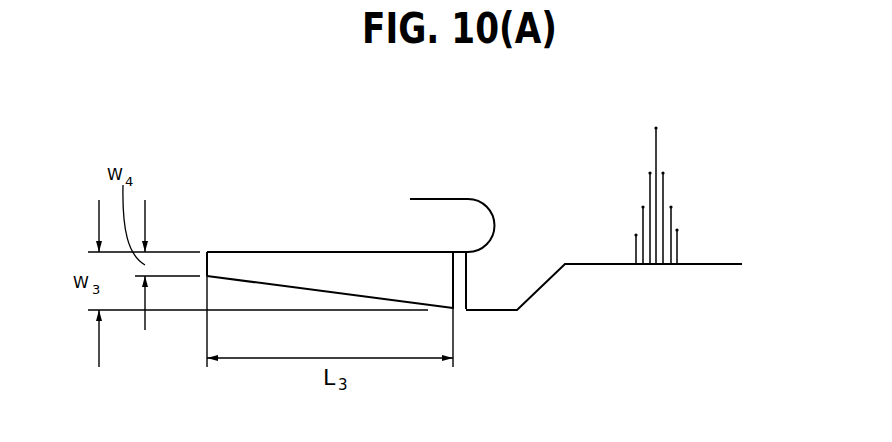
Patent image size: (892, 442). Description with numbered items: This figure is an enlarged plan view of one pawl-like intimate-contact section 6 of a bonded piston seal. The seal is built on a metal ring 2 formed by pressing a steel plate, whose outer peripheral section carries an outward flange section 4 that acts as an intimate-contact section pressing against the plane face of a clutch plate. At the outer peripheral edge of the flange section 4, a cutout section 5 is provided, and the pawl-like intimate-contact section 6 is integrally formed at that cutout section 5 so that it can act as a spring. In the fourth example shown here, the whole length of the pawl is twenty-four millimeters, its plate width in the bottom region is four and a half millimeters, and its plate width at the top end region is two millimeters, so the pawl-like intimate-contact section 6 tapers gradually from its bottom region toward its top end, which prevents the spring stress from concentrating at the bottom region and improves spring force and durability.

The metal ring 2 is at (685, 245).
The outward flange section 4 is at (607, 247).
The cutout section 5 is at (412, 220).
The pawl-like intimate-contact section 6 is at (313, 272).